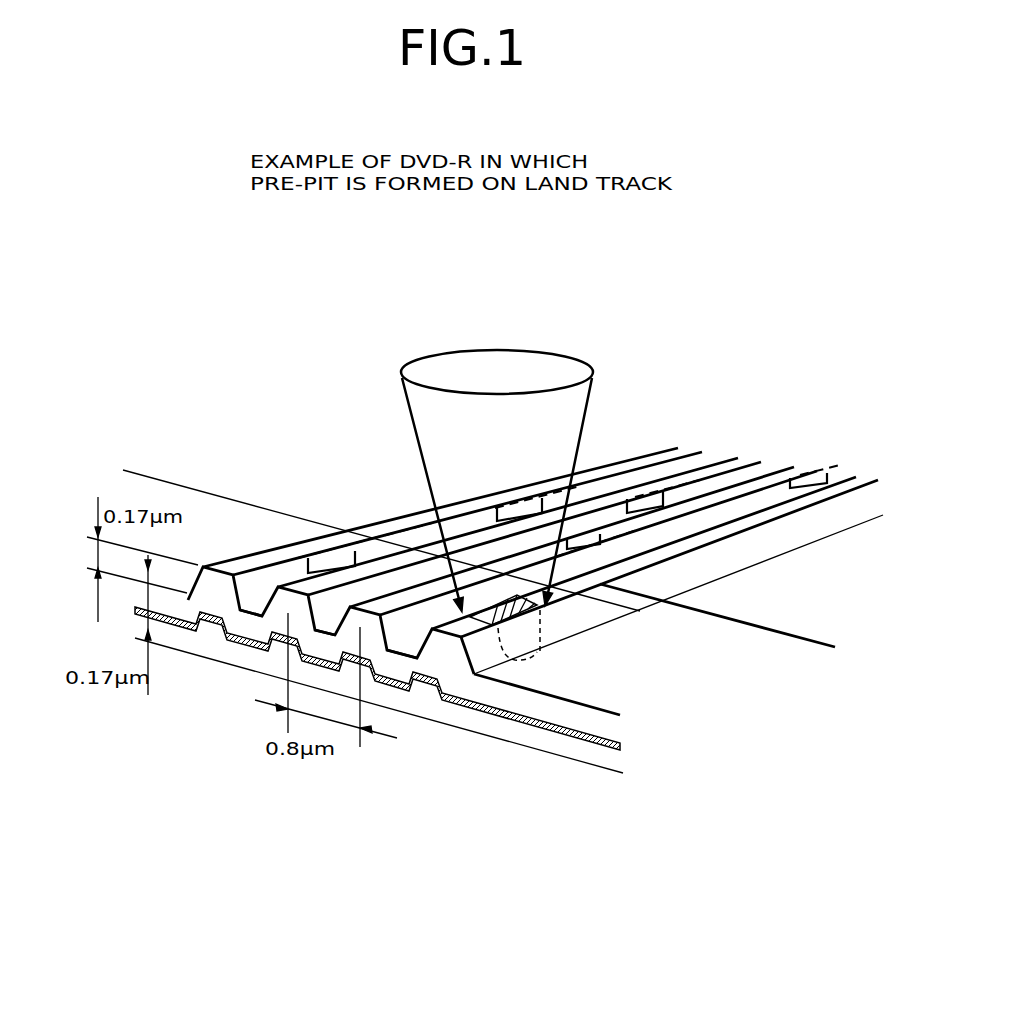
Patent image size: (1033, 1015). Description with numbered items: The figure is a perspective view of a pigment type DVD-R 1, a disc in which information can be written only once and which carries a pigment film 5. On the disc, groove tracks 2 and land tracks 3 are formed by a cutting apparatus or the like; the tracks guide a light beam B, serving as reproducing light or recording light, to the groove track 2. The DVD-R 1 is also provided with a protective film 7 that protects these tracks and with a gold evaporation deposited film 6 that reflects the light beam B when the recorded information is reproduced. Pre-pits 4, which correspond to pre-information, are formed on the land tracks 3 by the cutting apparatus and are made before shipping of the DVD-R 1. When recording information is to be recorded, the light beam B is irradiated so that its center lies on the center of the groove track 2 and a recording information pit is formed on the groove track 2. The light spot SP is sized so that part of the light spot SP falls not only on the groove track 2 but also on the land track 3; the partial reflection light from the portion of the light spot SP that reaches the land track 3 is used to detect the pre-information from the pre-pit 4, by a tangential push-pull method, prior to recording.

The DVD-R 1 is at (693, 728).
The groove track 2 is at (300, 587).
The land track 3 is at (258, 607).
The pre-pit 4 is at (352, 550).
The pigment film 5 is at (600, 705).
The gold evaporation deposited film 6 is at (533, 722).
The protective film 7 is at (147, 477).
The light beam B is at (588, 388).
The light spot SP is at (543, 622).